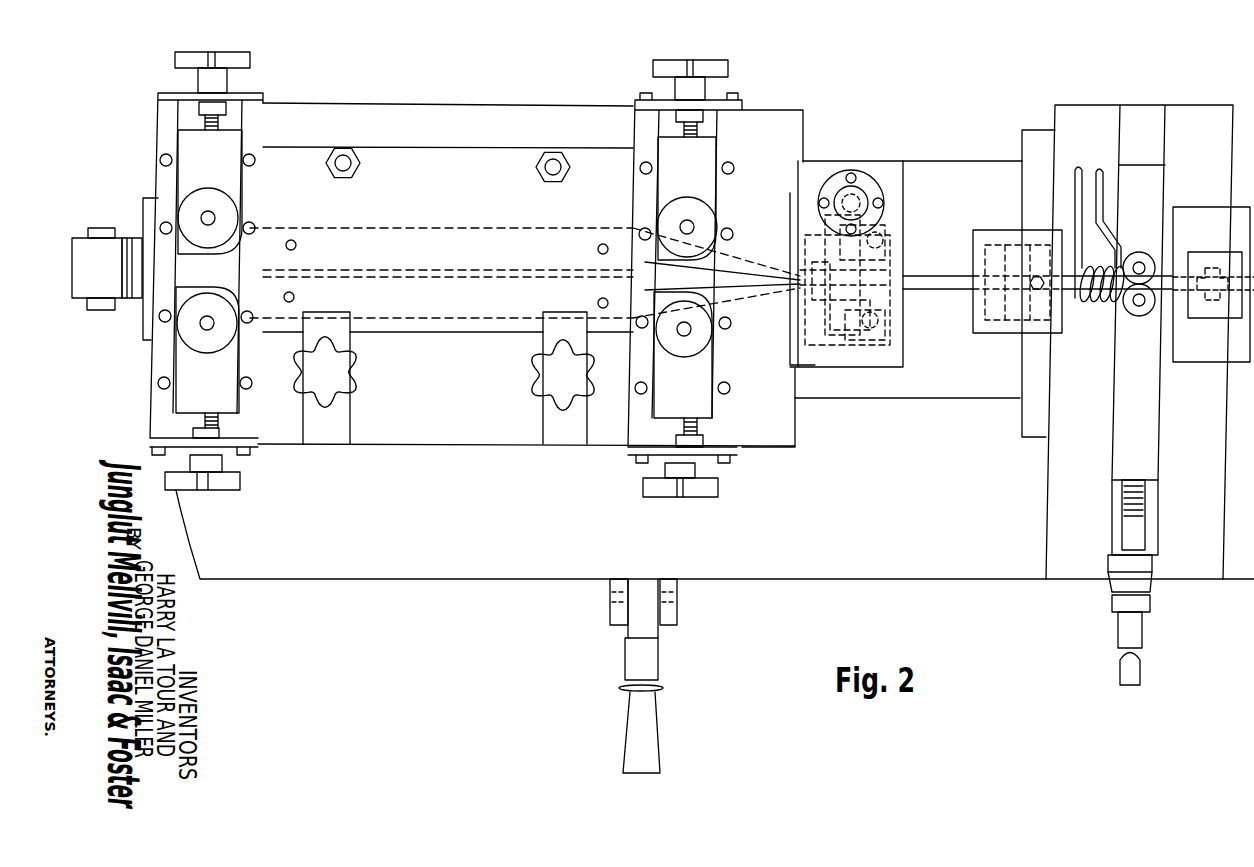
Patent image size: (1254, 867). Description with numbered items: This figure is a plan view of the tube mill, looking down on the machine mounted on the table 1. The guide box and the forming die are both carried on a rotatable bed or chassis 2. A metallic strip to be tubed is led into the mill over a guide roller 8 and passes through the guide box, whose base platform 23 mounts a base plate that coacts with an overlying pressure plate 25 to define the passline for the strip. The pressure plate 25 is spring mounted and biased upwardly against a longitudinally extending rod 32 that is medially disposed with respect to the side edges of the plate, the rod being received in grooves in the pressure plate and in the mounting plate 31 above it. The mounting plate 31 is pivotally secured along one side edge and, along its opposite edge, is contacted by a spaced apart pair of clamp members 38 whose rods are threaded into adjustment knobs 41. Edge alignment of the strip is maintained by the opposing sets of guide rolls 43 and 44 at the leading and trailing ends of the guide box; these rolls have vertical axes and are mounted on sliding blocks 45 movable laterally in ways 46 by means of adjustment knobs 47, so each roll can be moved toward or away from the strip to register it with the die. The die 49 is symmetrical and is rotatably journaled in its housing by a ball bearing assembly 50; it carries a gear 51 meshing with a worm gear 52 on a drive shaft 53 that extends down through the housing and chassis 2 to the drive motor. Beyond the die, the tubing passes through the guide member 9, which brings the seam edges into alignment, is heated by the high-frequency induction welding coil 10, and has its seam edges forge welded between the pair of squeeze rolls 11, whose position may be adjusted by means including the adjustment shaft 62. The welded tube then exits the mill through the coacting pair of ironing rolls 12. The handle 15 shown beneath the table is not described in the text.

The table 1 is at (853, 567).
The rotatable bed or chassis 2 is at (955, 185).
The guide roller 8 is at (82, 250).
The guide member 9 is at (985, 233).
The high-frequency induction welding coil 10 is at (1093, 302).
The squeeze rolls 11 is at (1139, 316).
The ironing rolls 12 is at (1213, 270).
The handle 15 is at (647, 656).
The base platform 23 is at (452, 425).
The pressure plate 25 is at (422, 248).
The mounting plate 31 is at (419, 168).
The rod 32 is at (440, 272).
The clamp members 38 is at (562, 437).
The adjustment knobs 41 is at (545, 370).
The guide rolls 43 is at (681, 205).
The guide rolls 44 is at (683, 350).
The sliding blocks 45 is at (698, 405).
The ways 46 is at (730, 197).
The adjustment knobs 47 is at (703, 490).
The die 49 is at (827, 318).
The ball bearing assembly 50 is at (888, 240).
The gear 51 is at (858, 338).
The worm gear 52 is at (848, 195).
The drive shaft 53 is at (868, 185).
The adjustment shaft 62 is at (1130, 628).